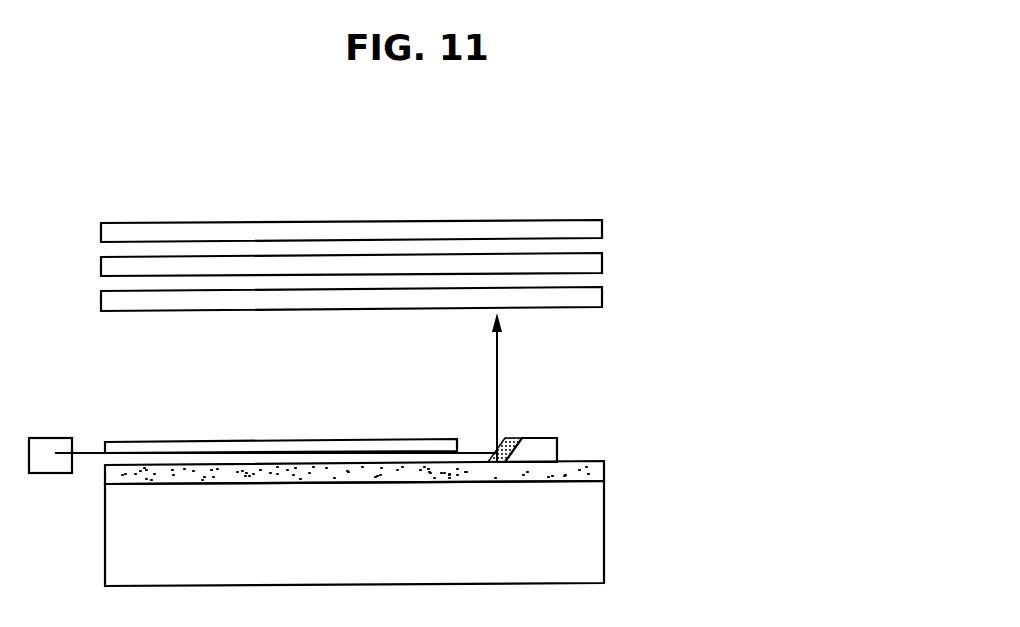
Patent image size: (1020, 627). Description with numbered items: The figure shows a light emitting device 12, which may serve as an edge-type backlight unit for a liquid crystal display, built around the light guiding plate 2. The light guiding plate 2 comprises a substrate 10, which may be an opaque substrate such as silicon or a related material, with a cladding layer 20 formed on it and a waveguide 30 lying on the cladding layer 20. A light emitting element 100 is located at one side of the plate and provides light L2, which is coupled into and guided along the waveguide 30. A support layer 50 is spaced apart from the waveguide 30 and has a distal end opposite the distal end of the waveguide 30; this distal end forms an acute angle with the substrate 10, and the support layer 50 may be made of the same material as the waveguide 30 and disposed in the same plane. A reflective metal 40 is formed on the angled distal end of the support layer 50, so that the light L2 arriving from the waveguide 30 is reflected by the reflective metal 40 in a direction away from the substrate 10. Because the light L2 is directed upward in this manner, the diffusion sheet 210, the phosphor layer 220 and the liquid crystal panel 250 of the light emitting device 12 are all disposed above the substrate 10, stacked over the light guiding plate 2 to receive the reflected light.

The light emitting device 12 is at (716, 150).
The liquid crystal panel 250 is at (602, 231).
The diffusion sheet 210 is at (602, 265).
The phosphor layer 220 is at (602, 299).
The light L2 is at (497, 345).
The light guiding plate 2 is at (614, 428).
The substrate 10 is at (592, 522).
The cladding layer 20 is at (604, 463).
The waveguide 30 is at (343, 444).
The reflective metal 40 is at (505, 438).
The support layer 50 is at (544, 440).
The light emitting element 100 is at (49, 476).